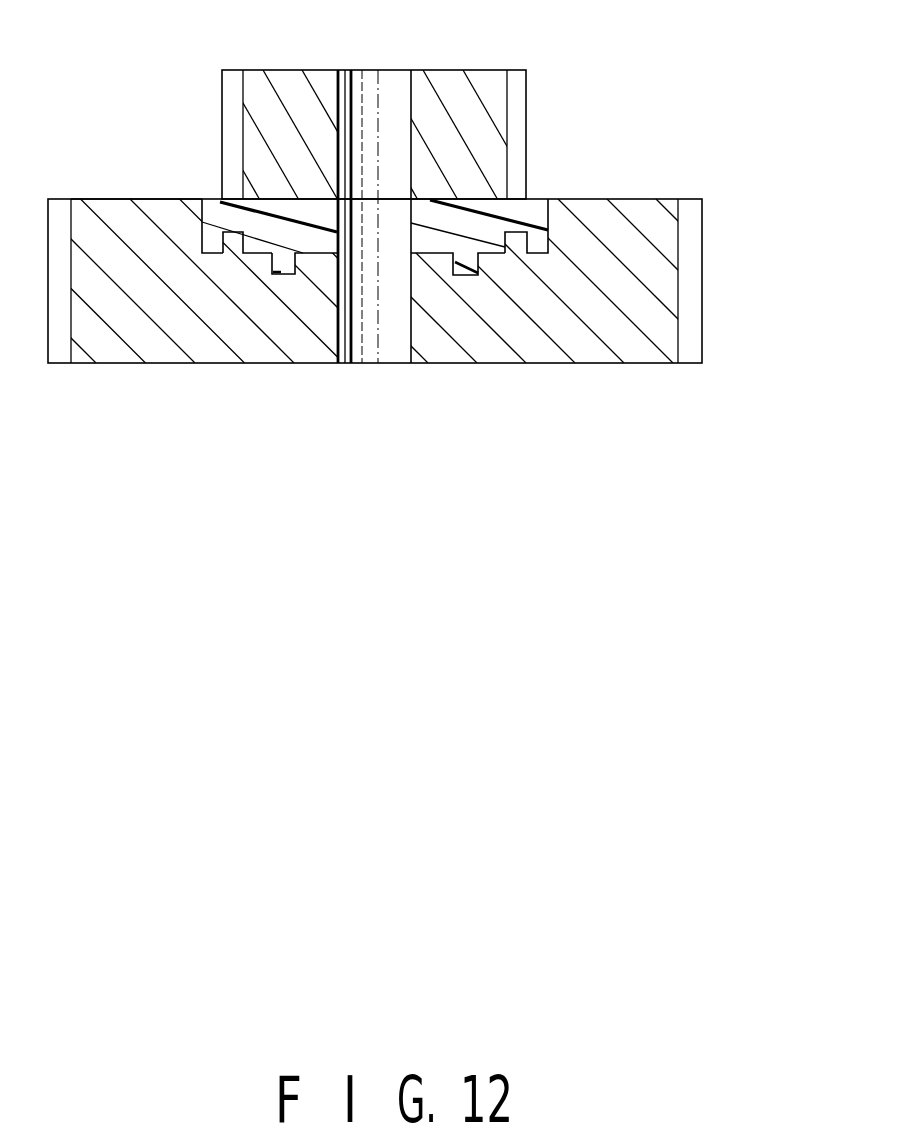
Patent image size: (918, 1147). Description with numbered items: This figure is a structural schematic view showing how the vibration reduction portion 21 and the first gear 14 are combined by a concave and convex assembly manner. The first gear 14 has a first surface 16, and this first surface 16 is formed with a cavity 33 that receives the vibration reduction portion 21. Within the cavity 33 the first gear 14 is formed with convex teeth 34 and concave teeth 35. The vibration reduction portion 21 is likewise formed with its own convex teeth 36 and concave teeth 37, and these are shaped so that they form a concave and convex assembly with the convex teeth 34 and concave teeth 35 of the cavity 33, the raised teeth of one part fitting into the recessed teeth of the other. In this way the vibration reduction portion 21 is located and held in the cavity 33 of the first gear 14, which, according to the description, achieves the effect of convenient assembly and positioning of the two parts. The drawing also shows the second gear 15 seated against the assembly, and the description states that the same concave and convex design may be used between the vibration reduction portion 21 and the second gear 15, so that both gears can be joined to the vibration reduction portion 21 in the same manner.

The first gear 14 is at (697, 263).
The second gear 15 is at (527, 90).
The first surface 16 is at (125, 198).
The vibration reduction portion 21 is at (483, 218).
The cavity 33 is at (200, 240).
The convex teeth 34 is at (233, 238).
The concave teeth 35 is at (290, 275).
The convex teeth 36 is at (472, 264).
The concave teeth 37 is at (527, 243).